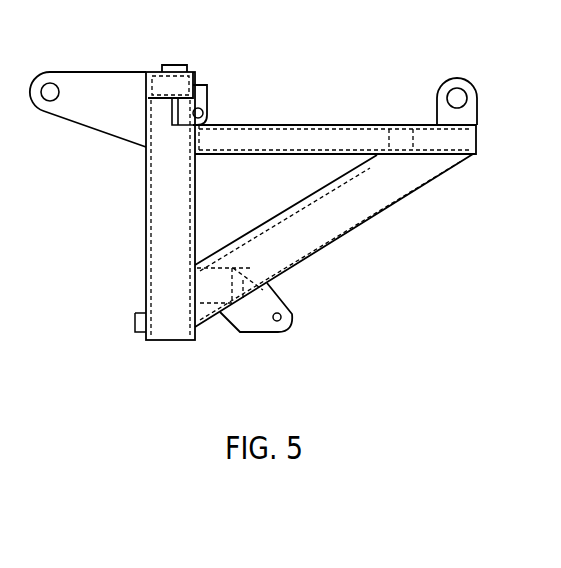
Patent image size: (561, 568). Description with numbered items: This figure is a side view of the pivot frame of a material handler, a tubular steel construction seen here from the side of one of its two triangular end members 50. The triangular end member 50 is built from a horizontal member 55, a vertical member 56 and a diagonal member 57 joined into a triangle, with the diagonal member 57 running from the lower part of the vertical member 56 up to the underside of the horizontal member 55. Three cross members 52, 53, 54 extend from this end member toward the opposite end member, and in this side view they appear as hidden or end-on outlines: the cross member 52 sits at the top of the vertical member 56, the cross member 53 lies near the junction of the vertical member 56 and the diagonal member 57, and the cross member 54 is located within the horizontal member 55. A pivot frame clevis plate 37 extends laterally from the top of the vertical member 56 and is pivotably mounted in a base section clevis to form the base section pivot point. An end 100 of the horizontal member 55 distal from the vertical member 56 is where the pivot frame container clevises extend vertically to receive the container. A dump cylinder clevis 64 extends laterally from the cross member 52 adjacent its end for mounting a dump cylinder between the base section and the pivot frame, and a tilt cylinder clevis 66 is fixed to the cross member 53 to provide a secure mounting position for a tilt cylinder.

The triangular end member 50 is at (321, 54).
The pivot frame clevis plate 37 is at (82, 72).
The cross member 52 is at (157, 72).
The cross member 53 is at (207, 273).
The cross member 54 is at (402, 135).
The horizontal member 55 is at (273, 125).
The vertical member 56 is at (158, 200).
The diagonal member 57 is at (345, 235).
The dump cylinder clevis 64 is at (208, 100).
The tilt cylinder clevis 66 is at (258, 330).
The end of the horizontal member 100 is at (473, 138).